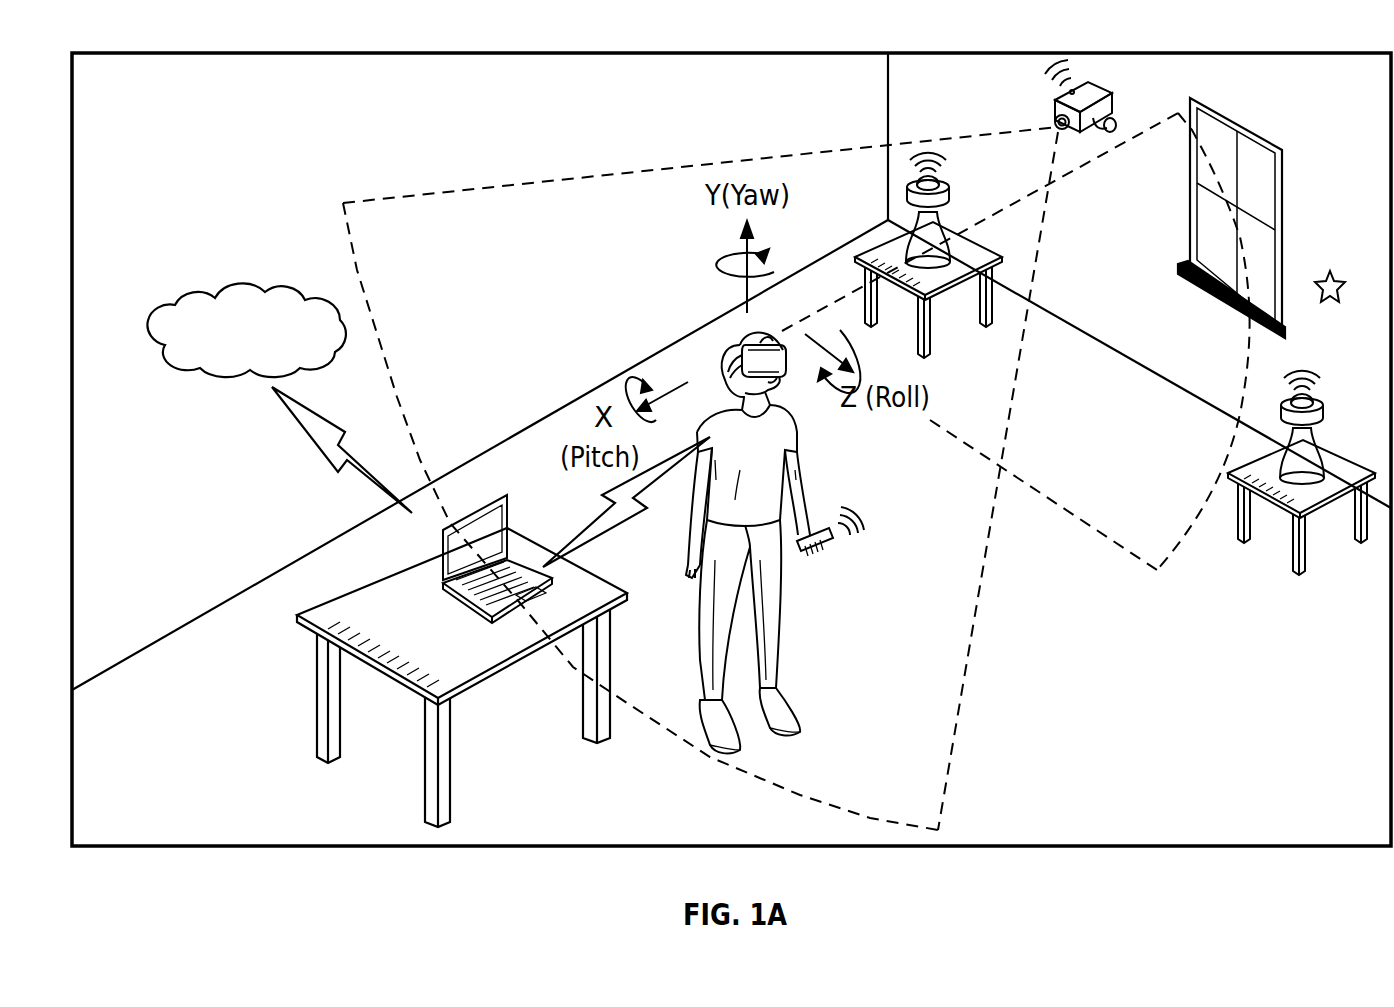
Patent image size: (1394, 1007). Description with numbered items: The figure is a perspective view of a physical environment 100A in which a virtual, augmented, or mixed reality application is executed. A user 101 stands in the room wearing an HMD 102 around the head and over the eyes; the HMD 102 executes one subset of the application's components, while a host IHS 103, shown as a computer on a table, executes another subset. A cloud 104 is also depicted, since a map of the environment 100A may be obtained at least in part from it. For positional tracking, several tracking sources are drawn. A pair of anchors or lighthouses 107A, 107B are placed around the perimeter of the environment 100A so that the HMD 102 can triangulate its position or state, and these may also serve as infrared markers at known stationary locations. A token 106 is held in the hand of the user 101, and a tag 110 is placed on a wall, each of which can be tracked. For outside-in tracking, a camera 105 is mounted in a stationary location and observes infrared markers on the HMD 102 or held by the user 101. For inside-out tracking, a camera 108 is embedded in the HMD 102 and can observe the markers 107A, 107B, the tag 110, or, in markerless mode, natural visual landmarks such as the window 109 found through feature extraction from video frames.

The physical environment 100A is at (161, 52).
The user 101 is at (777, 610).
The HMD 102 is at (775, 367).
The host IHS 103 is at (442, 548).
The cloud 104 is at (172, 305).
The camera 105 is at (1110, 97).
The token 106 is at (831, 541).
The anchor or lighthouse 107A is at (950, 196).
The anchor or lighthouse 107B is at (1323, 410).
The camera 108 is at (767, 333).
The window 109 is at (1283, 177).
The tag 110 is at (1338, 278).